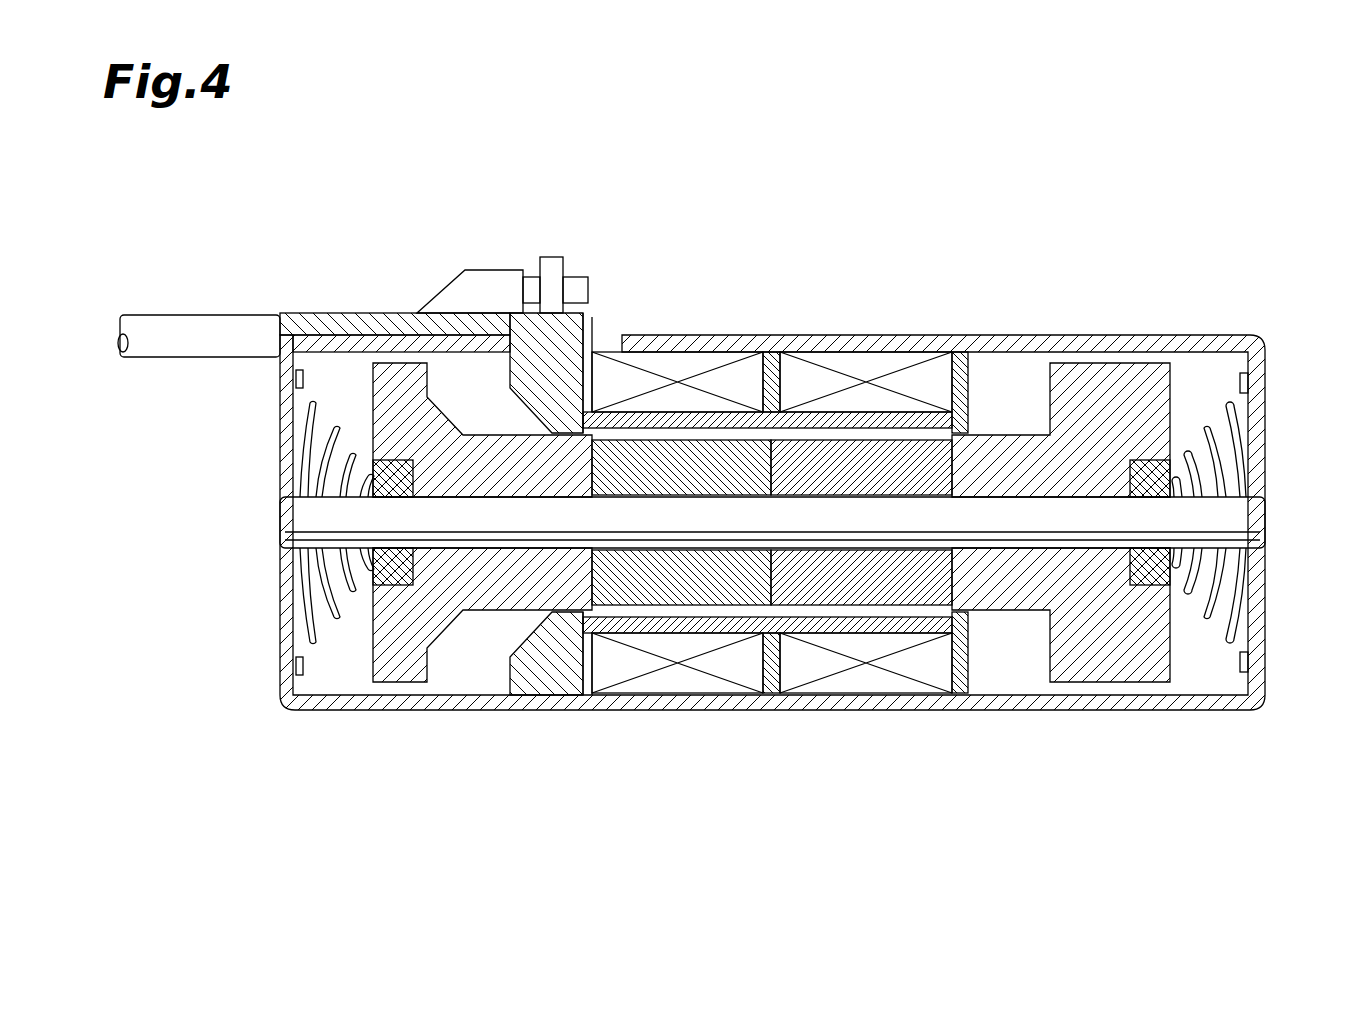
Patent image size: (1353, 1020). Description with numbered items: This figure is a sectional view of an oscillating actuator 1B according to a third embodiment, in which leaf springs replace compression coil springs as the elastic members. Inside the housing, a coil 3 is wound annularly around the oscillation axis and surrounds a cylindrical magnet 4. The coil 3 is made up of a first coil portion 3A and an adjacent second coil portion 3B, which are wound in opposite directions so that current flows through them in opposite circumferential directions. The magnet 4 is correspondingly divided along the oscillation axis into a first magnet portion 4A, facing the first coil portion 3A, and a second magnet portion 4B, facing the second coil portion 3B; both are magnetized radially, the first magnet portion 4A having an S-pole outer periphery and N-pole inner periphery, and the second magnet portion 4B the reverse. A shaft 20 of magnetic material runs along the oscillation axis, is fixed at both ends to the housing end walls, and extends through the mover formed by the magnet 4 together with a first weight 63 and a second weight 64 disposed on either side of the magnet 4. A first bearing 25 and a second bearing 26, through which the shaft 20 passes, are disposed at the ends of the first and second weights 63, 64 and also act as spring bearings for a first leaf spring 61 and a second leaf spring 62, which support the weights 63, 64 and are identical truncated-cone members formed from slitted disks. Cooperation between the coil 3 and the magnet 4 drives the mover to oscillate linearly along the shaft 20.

The oscillating actuator 1B is at (334, 198).
The coil 3 is at (772, 600).
The first coil portion 3A is at (822, 655).
The second coil portion 3B is at (718, 655).
The cylindrical magnet 4 is at (772, 411).
The first magnet portion 4A is at (830, 450).
The second magnet portion 4B is at (715, 450).
The shaft 20 is at (1235, 513).
The first bearing 25 is at (1152, 585).
The second bearing 26 is at (393, 570).
The first leaf spring 61 is at (1232, 597).
The second leaf spring 62 is at (305, 588).
The first weight 63 is at (1177, 653).
The second weight 64 is at (365, 650).